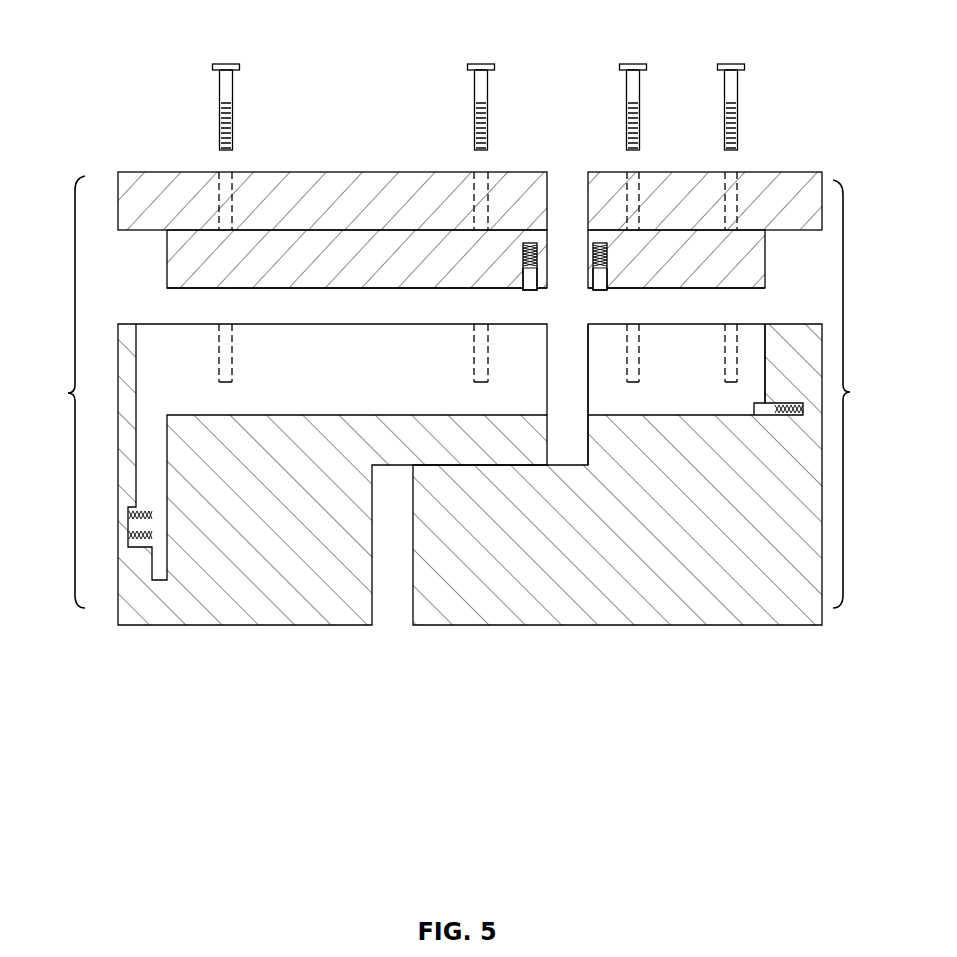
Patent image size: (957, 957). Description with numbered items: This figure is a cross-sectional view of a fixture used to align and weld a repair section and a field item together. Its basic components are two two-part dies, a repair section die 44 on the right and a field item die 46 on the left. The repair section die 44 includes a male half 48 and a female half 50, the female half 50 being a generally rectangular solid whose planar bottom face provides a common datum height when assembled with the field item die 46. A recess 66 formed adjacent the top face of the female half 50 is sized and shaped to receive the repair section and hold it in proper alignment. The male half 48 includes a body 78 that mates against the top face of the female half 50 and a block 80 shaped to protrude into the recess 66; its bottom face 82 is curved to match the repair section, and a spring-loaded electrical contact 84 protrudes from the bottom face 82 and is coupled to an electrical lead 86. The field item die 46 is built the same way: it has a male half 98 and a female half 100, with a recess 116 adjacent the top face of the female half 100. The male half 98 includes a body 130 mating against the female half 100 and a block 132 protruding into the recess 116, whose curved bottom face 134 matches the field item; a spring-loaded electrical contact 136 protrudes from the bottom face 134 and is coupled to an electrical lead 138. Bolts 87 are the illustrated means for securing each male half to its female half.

The repair section die 44 is at (852, 394).
The field item die 46 is at (59, 392).
The male half 48 is at (672, 210).
The female half 50 is at (694, 544).
The recess 66 is at (661, 369).
The body 78 is at (718, 179).
The block 80 is at (765, 258).
The bottom face 82 is at (730, 289).
The spring-loaded electrical contact 84 is at (604, 288).
The electrical lead 86 is at (600, 243).
The bolts 87 is at (229, 65).
The male half 98 is at (309, 215).
The female half 100 is at (254, 544).
The recess 116 is at (302, 369).
The body 130 is at (313, 188).
The block 132 is at (166, 251).
The bottom face 134 is at (217, 289).
The spring-loaded electrical contact 136 is at (530, 288).
The electrical lead 138 is at (531, 243).